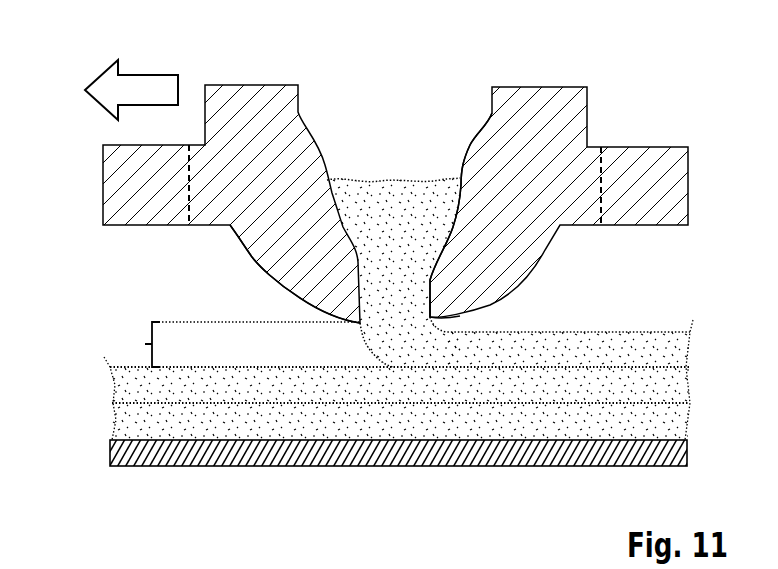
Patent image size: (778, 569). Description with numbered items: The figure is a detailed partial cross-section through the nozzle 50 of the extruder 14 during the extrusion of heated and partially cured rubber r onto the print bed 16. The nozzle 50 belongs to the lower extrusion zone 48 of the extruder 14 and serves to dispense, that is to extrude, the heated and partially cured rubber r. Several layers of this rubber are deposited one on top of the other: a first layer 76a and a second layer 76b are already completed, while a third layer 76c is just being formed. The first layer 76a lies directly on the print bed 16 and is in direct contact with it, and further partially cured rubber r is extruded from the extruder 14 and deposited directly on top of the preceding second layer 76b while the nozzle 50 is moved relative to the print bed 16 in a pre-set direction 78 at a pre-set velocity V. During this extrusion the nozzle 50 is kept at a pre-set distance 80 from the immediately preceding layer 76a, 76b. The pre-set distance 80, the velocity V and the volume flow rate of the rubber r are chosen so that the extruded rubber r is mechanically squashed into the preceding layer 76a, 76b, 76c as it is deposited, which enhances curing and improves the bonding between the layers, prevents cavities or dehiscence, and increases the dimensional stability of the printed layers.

The extruder 14 is at (537, 98).
The lower extrusion zone 48 is at (470, 255).
The nozzle 50 is at (444, 318).
The print bed 16 is at (275, 456).
The first layer 76a is at (135, 426).
The second layer 76b is at (137, 390).
The third layer 76c is at (617, 348).
The pre-set distance 80 is at (126, 344).
The pre-set direction 78 is at (130, 91).
The partially cured rubber r is at (380, 255).